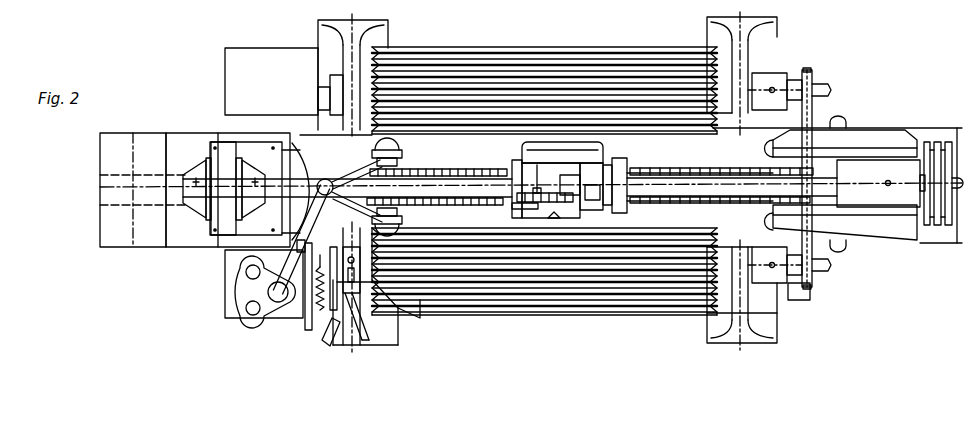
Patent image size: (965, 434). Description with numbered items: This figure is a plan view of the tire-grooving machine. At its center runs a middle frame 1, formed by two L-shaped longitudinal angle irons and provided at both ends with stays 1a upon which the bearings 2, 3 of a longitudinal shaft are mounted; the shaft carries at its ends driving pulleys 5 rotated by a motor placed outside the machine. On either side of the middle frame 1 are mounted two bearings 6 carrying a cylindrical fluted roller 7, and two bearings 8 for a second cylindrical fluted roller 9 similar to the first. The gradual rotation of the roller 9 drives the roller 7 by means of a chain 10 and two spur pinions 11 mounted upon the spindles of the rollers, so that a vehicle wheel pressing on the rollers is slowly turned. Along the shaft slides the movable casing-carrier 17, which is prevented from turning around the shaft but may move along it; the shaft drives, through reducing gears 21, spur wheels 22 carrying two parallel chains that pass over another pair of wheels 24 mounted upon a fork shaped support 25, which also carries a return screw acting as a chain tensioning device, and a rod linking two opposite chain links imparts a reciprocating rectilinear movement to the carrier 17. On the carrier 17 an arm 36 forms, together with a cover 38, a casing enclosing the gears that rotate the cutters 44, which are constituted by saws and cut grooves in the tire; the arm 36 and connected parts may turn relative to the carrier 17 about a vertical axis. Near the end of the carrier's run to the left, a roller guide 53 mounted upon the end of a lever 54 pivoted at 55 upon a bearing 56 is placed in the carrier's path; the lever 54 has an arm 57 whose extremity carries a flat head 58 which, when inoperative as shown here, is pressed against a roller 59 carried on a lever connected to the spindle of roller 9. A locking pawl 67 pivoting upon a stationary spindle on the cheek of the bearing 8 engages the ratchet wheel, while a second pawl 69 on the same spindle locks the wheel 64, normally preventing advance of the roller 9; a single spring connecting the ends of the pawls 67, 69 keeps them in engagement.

The stay 1a is at (142, 190).
The middle frame 1 is at (564, 147).
The bearing 2 is at (510, 188).
The bearing 3 is at (881, 183).
The driving pulley 5 is at (938, 142).
The bearing 6 is at (792, 57).
The cylindrical fluted roller 7 is at (518, 58).
The bearing 8 is at (740, 308).
The cylindrical fluted roller 9 is at (533, 303).
The chain 10 is at (814, 116).
The spur pinion 11 is at (812, 76).
The movable casing-carrier 17 is at (626, 172).
The reducing gear 21 is at (845, 184).
The spur wheel 22 is at (782, 174).
The wheel 24 is at (402, 183).
The fork shaped support 25 is at (315, 170).
The arm 36 is at (546, 149).
The cover 38 is at (596, 150).
The rotating cutter 44 is at (518, 206).
The roller guide 53 is at (340, 168).
The lever 54 is at (303, 239).
The pivot 55 is at (290, 305).
The bearing 56 is at (248, 293).
The arm 57 is at (296, 308).
The flat head 58 is at (327, 340).
The roller 59 is at (360, 321).
The wheel 64 is at (354, 259).
The locking pawl 67 is at (248, 270).
The second pawl 69 is at (416, 319).